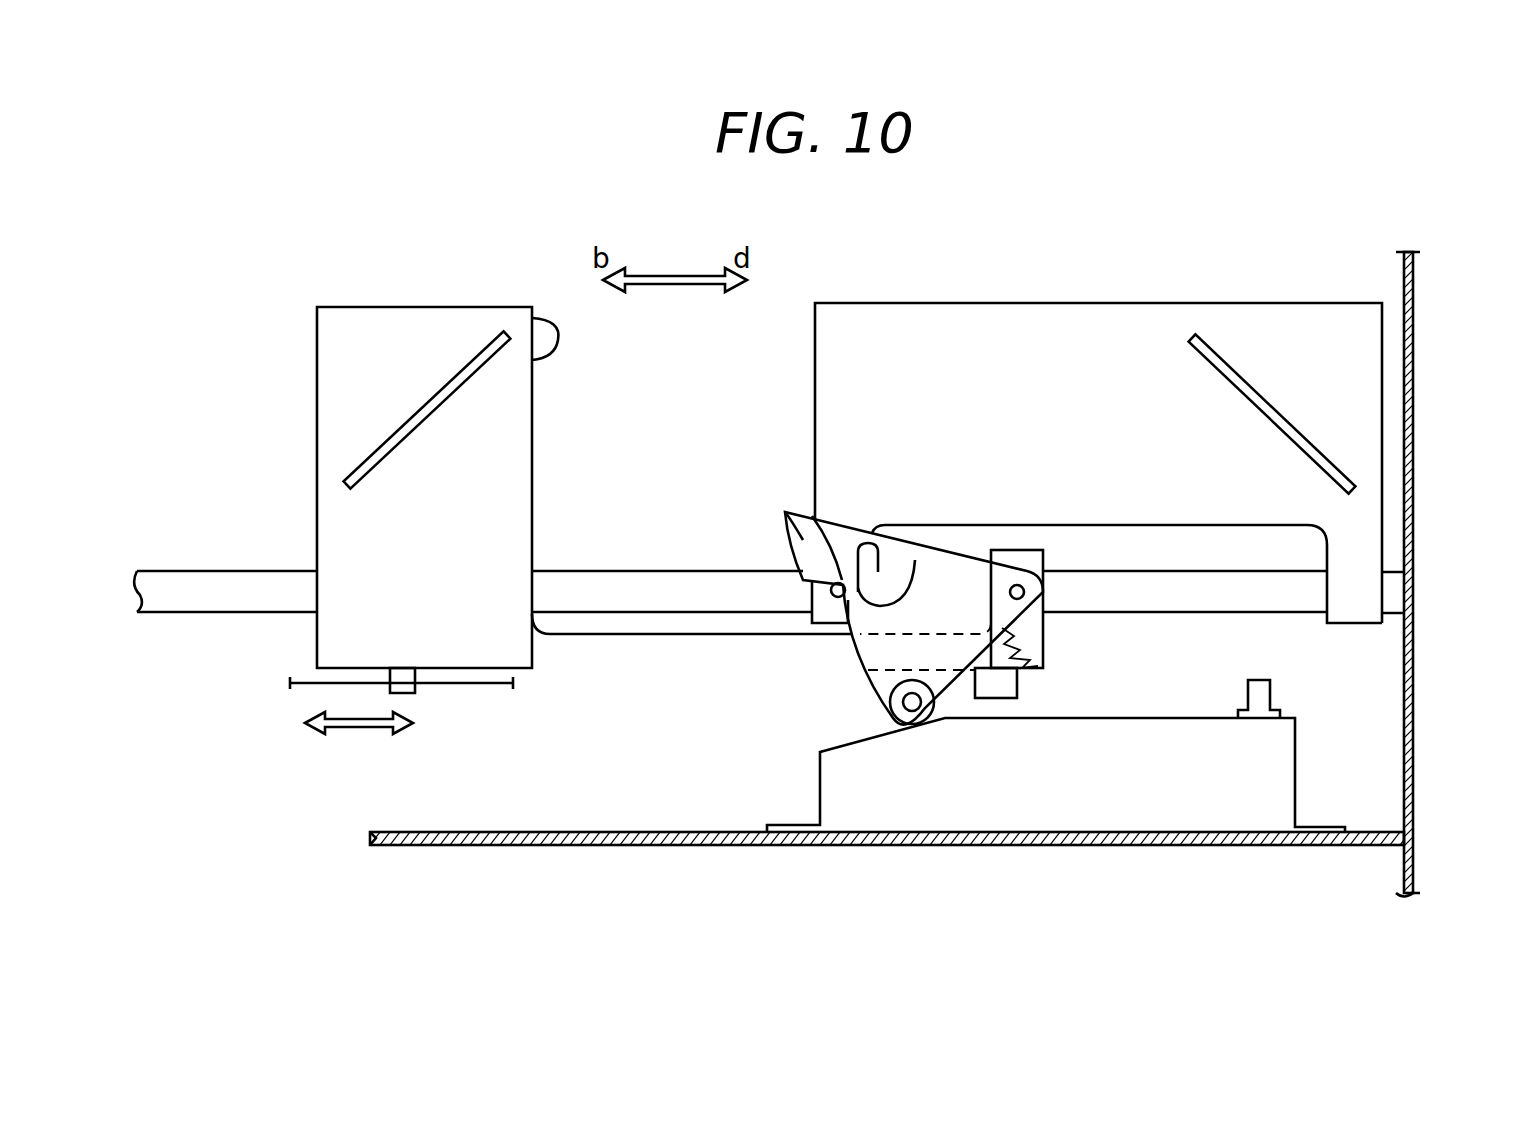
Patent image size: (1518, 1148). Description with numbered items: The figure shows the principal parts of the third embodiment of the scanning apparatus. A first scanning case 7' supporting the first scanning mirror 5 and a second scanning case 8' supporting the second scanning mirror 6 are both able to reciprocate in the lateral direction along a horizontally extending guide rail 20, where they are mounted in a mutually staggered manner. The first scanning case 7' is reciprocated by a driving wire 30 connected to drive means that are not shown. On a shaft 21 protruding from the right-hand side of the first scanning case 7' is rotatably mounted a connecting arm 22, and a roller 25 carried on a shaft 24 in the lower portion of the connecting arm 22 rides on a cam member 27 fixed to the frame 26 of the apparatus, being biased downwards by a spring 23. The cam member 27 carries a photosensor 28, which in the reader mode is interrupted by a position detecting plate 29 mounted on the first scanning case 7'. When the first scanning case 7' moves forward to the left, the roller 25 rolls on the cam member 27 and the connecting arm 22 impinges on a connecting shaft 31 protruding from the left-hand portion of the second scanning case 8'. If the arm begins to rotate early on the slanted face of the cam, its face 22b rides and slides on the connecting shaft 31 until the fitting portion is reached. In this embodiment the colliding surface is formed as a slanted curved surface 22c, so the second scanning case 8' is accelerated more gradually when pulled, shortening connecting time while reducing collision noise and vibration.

The first scanning mirror 5 is at (355, 432).
The first scanning case 7' is at (427, 368).
The guide rail 20 is at (160, 580).
The driving wire 30 is at (295, 690).
The second scanning case 8' is at (1098, 431).
The second scanning mirror 6 is at (1290, 428).
The frame 26 is at (1413, 306).
The cam member 27 is at (1150, 810).
The photosensor 28 is at (1262, 697).
The shaft 21 is at (973, 597).
The connecting arm 22 is at (877, 655).
The face of the connecting arm 22b is at (790, 530).
The slanted curved surface 22c is at (915, 560).
The connecting shaft 31 is at (795, 512).
The spring 23 is at (1045, 635).
The roller 25 is at (893, 690).
The shaft 24 is at (908, 712).
The position detecting plate 29 is at (992, 698).